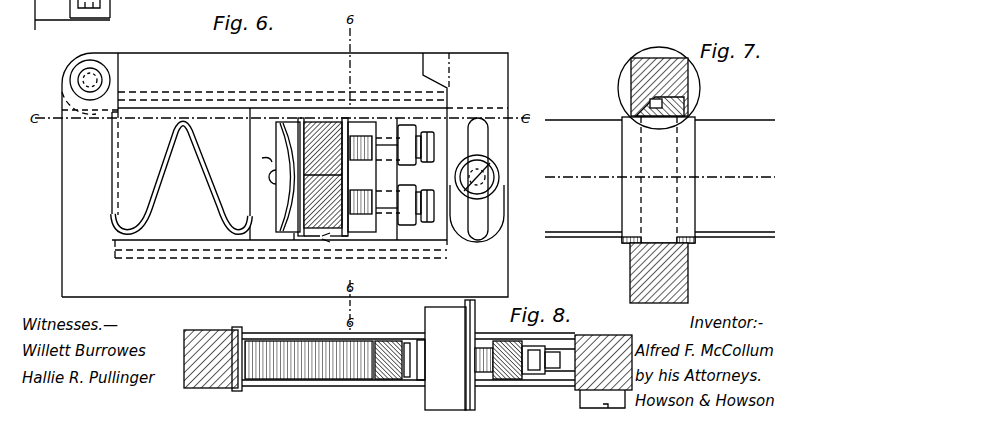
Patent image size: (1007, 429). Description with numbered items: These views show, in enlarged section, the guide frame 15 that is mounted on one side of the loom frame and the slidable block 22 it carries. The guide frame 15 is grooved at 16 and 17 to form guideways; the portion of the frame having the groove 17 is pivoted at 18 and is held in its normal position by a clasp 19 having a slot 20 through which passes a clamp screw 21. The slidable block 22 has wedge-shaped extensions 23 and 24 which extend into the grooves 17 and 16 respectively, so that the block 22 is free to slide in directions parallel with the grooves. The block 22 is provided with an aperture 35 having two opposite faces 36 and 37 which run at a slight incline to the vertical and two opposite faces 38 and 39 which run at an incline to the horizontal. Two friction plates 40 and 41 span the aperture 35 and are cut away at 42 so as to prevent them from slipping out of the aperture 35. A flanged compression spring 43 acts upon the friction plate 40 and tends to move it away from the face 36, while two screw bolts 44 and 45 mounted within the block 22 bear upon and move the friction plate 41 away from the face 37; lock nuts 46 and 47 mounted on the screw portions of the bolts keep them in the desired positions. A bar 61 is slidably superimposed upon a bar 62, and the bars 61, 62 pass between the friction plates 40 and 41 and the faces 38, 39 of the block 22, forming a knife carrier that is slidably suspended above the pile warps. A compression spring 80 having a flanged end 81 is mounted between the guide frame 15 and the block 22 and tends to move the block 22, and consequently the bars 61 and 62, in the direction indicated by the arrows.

In FIG. 7, the guide frame 15 is at (690, 275).
In FIG. 8, the guide frame 15 is at (210, 330).
In FIG. 6, the groove 16 is at (146, 258).
In FIG. 7, the groove 16 is at (690, 254).
In FIG. 8, the groove 16 is at (566, 380).
In FIG. 6, the groove 17 is at (154, 102).
In FIG. 7, the groove 17 is at (690, 108).
In FIG. 6, the pivot 18 is at (80, 80).
In FIG. 6, the clasp 19 is at (285, 175).
In FIG. 6, the slot 20 is at (486, 135).
In FIG. 6, the clamp screw 21 is at (494, 177).
In FIG. 6, the slidable block 22 is at (262, 157).
In FIG. 8, the slidable block 22 is at (392, 356).
In FIG. 7, the wedge-shaped extension 23 is at (688, 96).
In FIG. 7, the wedge-shaped extension 24 is at (630, 280).
In FIG. 6, the aperture 35 is at (405, 170).
In FIG. 6, the face 36 is at (262, 174).
In FIG. 6, the face 37 is at (388, 235).
In FIG. 6, the face 38 is at (300, 118).
In FIG. 6, the face 39 is at (296, 240).
In FIG. 6, the friction plate 40 is at (285, 177).
In FIG. 8, the friction plate 40 is at (440, 390).
In FIG. 6, the friction plate 41 is at (348, 118).
In FIG. 7, the friction plate 41 is at (690, 144).
In FIG. 8, the friction plate 41 is at (465, 345).
In FIG. 7, the cut-away 42 is at (661, 125).
In FIG. 8, the cut-away 42 is at (475, 368).
In FIG. 6, the flanged compression spring 43 is at (287, 145).
In FIG. 8, the flanged compression spring 43 is at (407, 378).
In FIG. 6, the screw bolt 44 is at (427, 140).
In FIG. 8, the screw bolt 44 is at (493, 380).
In FIG. 6, the screw bolt 45 is at (432, 218).
In FIG. 6, the lock nut 46 is at (404, 125).
In FIG. 8, the lock nut 46 is at (534, 376).
In FIG. 6, the lock nut 47 is at (355, 182).
In FIG. 6, the bar 61 is at (320, 122).
In FIG. 7, the bar 61 is at (660, 180).
In FIG. 8, the bar 61 is at (441, 358).
In FIG. 6, the bar 62 is at (332, 238).
In FIG. 7, the bar 62 is at (736, 205).
In FIG. 8, the bar 62 is at (475, 328).
In FIG. 6, the compression spring 80 is at (210, 190).
In FIG. 8, the compression spring 80 is at (288, 340).
In FIG. 6, the flanged end 81 is at (118, 148).
In FIG. 8, the flanged end 81 is at (244, 350).